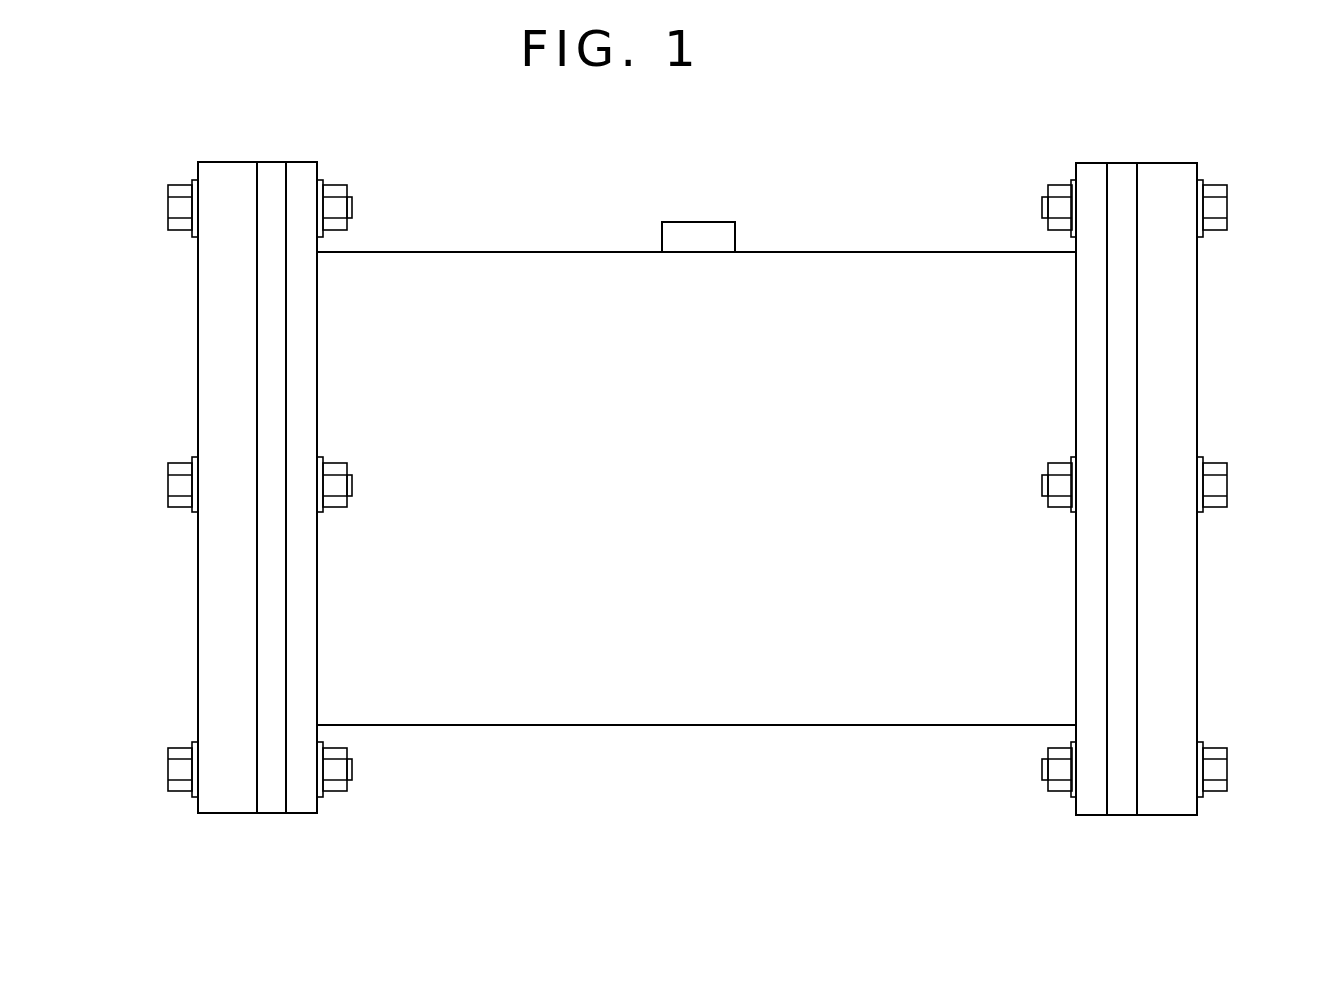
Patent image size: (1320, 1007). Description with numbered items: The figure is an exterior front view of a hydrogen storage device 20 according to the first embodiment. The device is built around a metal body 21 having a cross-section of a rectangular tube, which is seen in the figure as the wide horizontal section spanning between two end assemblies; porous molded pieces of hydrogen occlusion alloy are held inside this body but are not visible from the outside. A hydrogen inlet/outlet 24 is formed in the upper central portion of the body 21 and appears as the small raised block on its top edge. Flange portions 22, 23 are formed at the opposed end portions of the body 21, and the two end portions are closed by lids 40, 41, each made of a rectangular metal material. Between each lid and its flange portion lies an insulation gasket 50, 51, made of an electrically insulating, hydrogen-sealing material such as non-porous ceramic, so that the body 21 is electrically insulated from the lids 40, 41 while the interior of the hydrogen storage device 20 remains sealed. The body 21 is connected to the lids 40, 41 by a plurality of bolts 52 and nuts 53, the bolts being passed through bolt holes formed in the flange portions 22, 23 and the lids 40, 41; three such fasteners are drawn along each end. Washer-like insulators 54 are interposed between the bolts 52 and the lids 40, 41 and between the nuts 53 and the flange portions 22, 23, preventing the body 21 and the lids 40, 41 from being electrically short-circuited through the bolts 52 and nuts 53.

The hydrogen storage device 20 is at (584, 183).
The body 21 is at (825, 252).
The flange portion 22 is at (1087, 163).
The flange portion 23 is at (307, 162).
The hydrogen inlet/outlet 24 is at (720, 222).
The lid 40 is at (1130, 493).
The lid 41 is at (278, 492).
The insulation gasket 50 is at (1127, 815).
The insulation gasket 51 is at (272, 814).
The bolt 52 is at (182, 185).
The nut 53 is at (333, 185).
The washer-like insulator 54 is at (193, 236).